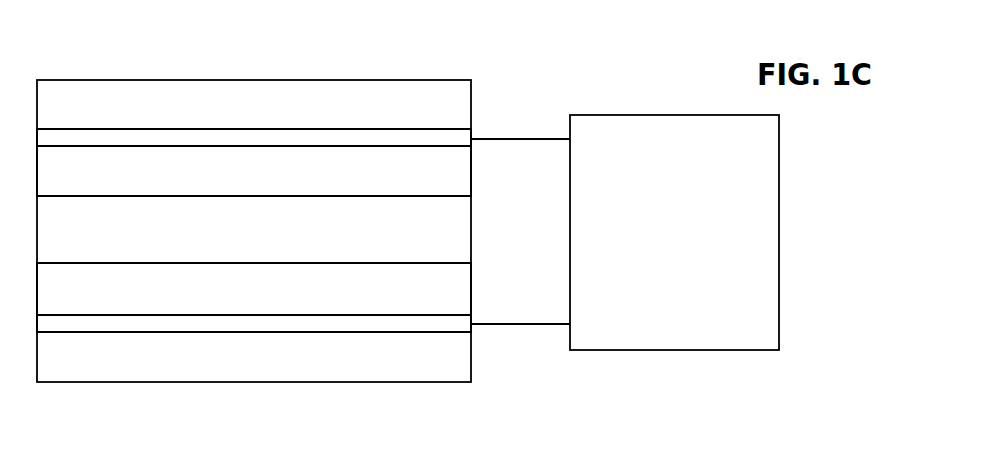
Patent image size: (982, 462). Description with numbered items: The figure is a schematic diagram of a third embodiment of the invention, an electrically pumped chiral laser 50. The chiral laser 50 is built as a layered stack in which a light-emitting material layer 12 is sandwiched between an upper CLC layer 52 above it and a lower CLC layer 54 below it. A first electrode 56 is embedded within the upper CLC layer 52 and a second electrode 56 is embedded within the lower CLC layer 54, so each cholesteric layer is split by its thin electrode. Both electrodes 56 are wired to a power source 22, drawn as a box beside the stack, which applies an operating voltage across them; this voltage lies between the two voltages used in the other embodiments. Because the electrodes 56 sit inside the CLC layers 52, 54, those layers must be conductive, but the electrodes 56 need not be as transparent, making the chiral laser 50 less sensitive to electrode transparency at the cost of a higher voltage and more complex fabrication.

The light-emitting material layer 12 is at (188, 230).
The power source 22 is at (779, 282).
The chiral laser 50 is at (538, 81).
The upper CLC layer 52 is at (471, 172).
The lower CLC layer 54 is at (471, 292).
The electrode 56 is at (420, 139).